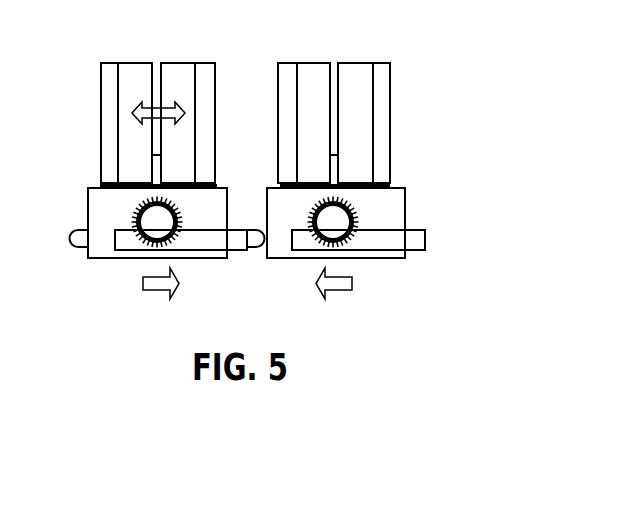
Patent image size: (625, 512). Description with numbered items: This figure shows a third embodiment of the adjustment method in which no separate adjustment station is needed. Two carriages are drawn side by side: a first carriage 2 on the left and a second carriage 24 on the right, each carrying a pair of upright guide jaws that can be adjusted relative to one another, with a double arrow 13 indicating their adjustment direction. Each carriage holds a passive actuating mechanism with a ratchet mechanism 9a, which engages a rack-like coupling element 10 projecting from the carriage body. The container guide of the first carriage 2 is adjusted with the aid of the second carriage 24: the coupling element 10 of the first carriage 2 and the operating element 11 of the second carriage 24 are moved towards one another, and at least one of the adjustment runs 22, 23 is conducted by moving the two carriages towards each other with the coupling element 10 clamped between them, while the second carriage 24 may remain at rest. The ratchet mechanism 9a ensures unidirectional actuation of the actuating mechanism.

The carriage 2 is at (76, 144).
The ratchet mechanism 9a is at (148, 214).
The coupling element 10 is at (208, 240).
The operating element 11 is at (255, 243).
The direction of adjustment 13 is at (168, 104).
The adjustment run 22 is at (157, 286).
The adjustment run 23 is at (338, 287).
The second carriage 24 is at (402, 150).